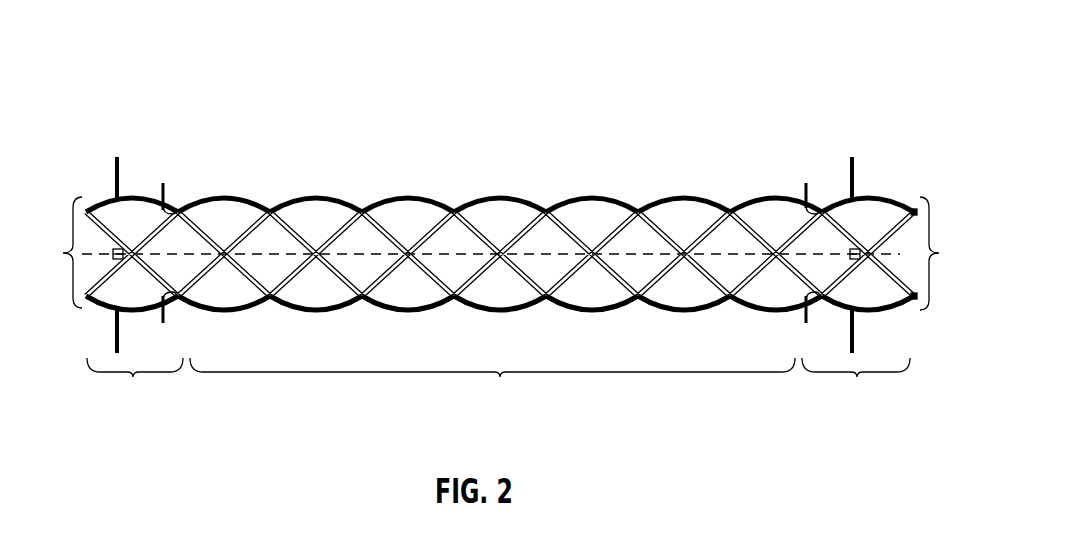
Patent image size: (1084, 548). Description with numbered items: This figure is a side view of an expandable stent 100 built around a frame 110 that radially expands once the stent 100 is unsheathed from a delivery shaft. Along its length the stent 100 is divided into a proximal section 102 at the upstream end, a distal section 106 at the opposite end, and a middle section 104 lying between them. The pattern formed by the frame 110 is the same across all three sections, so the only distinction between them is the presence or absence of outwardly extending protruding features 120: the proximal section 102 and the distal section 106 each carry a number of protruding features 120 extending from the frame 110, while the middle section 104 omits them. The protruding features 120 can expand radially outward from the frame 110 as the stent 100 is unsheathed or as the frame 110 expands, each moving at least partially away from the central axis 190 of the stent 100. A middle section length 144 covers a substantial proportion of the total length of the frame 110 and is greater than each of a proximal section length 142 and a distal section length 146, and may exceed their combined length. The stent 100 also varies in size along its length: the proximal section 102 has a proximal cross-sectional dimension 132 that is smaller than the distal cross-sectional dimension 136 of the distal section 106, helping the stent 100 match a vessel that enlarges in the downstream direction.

The expandable stent 100 is at (103, 84).
The proximal section 102 is at (826, 150).
The middle section 104 is at (501, 208).
The distal section 106 is at (149, 154).
The frame 110 is at (335, 200).
The protruding features 120 is at (165, 184).
The proximal cross-sectional dimension 132 is at (939, 252).
The distal cross-sectional dimension 136 is at (63, 252).
The proximal section length 142 is at (857, 377).
The middle section length 144 is at (500, 377).
The distal section length 146 is at (133, 377).
The central axis 190 is at (663, 252).